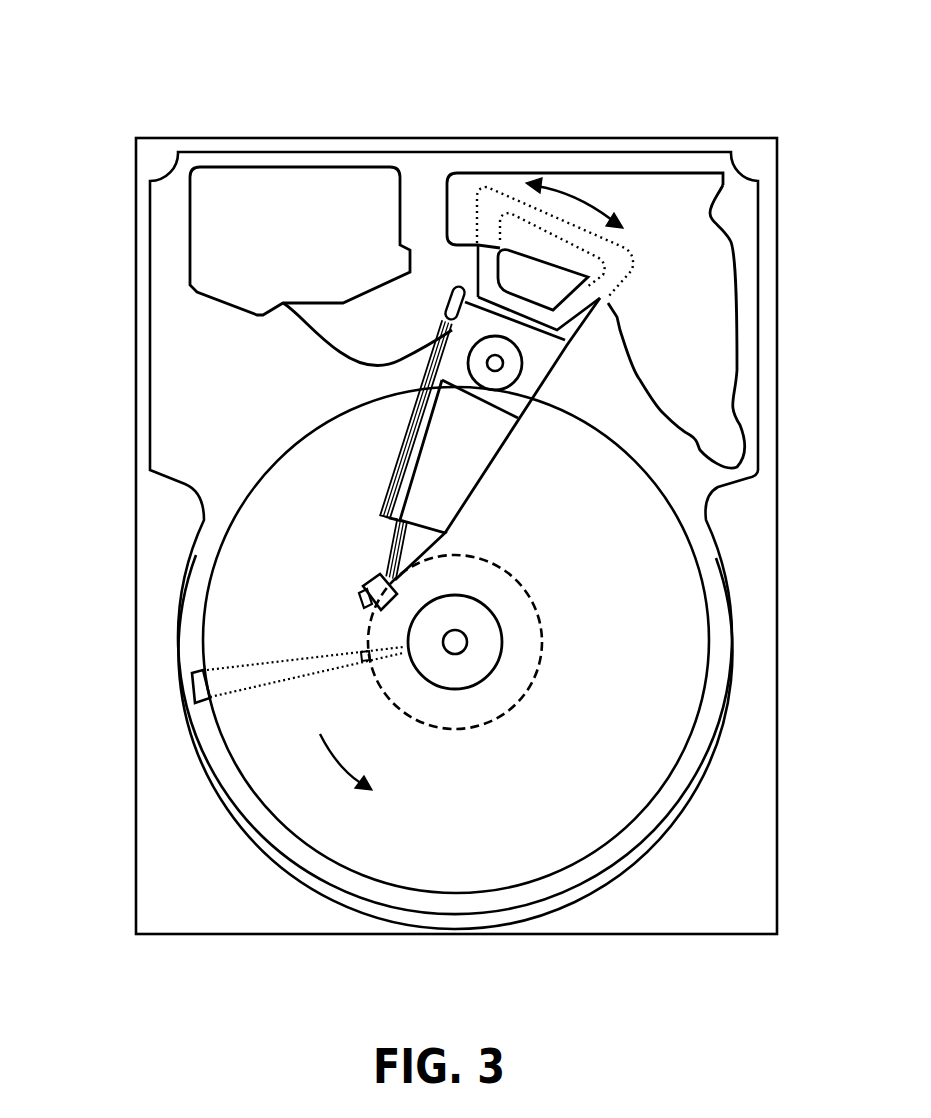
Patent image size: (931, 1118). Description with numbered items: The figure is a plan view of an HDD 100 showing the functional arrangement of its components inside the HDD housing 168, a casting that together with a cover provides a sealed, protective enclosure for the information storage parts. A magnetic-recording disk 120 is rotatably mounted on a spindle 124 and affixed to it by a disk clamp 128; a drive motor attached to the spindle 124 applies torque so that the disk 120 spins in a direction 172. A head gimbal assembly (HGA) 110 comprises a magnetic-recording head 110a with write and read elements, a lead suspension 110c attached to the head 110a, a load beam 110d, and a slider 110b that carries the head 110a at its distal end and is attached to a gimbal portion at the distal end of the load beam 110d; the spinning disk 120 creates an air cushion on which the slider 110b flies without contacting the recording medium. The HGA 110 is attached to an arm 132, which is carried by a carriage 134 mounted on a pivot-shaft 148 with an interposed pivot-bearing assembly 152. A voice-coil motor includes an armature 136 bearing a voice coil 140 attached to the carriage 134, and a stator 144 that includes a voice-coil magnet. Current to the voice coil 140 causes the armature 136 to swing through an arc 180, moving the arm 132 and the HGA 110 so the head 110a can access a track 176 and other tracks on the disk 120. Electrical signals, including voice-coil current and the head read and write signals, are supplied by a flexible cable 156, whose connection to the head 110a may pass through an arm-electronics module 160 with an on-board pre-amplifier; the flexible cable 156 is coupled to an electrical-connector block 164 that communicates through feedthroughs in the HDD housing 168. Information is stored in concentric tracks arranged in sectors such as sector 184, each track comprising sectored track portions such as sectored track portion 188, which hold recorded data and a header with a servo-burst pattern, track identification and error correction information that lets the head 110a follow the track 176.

The HDD 100 is at (104, 70).
The head gimbal assembly 110 is at (227, 465).
The magnetic-recording head 110a is at (370, 587).
The slider 110b is at (373, 563).
The lead suspension 110c is at (383, 530).
The load beam 110d is at (387, 512).
The magnetic-recording disk 120 is at (640, 592).
The spindle 124 is at (457, 640).
The disk clamp 128 is at (480, 657).
The arm 132 is at (447, 478).
The carriage 134 is at (513, 396).
The armature 136 is at (472, 280).
The voice coil 140 is at (490, 250).
The stator 144 is at (705, 267).
The pivot-shaft 148 is at (500, 363).
The pivot-bearing assembly 152 is at (507, 374).
The flexible cable 156 is at (312, 338).
The arm-electronics module 160 is at (442, 334).
The electrical-connector block 164 is at (213, 238).
The HDD housing 168 is at (756, 152).
The direction 172 is at (371, 760).
The track 176 is at (530, 602).
The arc 180 is at (577, 193).
The sector 184 is at (196, 686).
The sectored track portion 188 is at (363, 655).